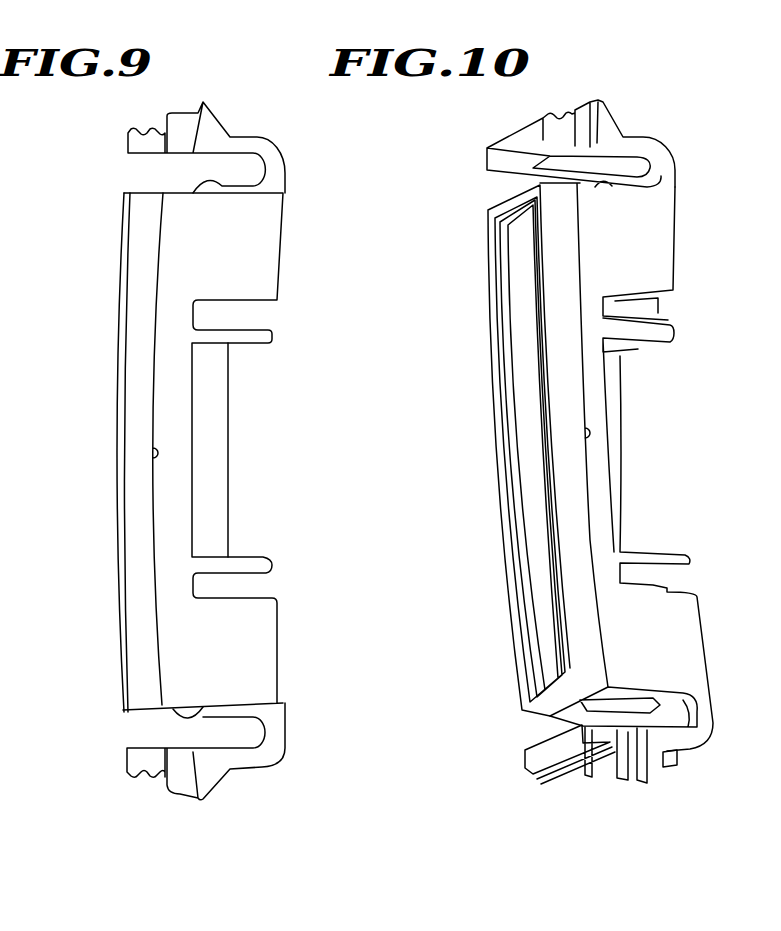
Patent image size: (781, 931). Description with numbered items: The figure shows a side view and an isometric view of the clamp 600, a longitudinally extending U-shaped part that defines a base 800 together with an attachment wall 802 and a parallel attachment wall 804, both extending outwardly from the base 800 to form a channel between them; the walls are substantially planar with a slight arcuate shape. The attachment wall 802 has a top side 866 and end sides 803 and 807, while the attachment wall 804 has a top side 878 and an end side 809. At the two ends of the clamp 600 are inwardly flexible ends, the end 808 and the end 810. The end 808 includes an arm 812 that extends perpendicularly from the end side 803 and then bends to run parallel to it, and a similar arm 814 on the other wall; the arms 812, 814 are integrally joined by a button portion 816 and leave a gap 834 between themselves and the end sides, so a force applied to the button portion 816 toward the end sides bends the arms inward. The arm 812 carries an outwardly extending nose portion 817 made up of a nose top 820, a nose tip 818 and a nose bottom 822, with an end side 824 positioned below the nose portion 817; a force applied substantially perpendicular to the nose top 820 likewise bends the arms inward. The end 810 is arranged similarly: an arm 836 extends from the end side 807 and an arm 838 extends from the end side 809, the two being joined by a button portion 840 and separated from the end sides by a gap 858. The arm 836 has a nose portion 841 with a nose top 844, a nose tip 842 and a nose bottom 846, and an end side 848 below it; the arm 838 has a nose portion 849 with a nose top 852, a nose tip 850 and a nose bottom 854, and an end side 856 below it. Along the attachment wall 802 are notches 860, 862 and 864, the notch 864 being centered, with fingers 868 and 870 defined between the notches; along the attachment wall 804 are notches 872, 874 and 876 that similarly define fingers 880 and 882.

In FIG. 9, the clamp 600 is at (45, 466).
In FIG. 10, the clamp 600 is at (420, 409).
In FIG. 9, the base 800 is at (133, 333).
In FIG. 10, the base 800 is at (513, 260).
In FIG. 9, the attachment wall 802 is at (253, 253).
In FIG. 10, the attachment wall 802 is at (658, 245).
In FIG. 9, the end side 803 is at (217, 187).
In FIG. 10, the end side 803 is at (603, 183).
In FIG. 9, the attachment wall 804 is at (218, 453).
In FIG. 10, the attachment wall 804 is at (637, 532).
In FIG. 9, the end side 807 is at (198, 712).
In FIG. 10, the end side 807 is at (667, 703).
In FIG. 9, the end 808 is at (233, 90).
In FIG. 10, the end 808 is at (625, 82).
In FIG. 10, the end side 809 is at (603, 710).
In FIG. 9, the end 810 is at (240, 824).
In FIG. 10, the end 810 is at (490, 757).
In FIG. 9, the arm 812 is at (280, 148).
In FIG. 10, the arm 812 is at (667, 145).
In FIG. 10, the arm 814 is at (650, 180).
In FIG. 9, the button portion 816 is at (152, 128).
In FIG. 10, the button portion 816 is at (497, 142).
In FIG. 9, the nose portion 817 is at (205, 124).
In FIG. 10, the nose portion 817 is at (570, 115).
In FIG. 9, the nose tip 818 is at (208, 101).
In FIG. 10, the nose tip 818 is at (610, 100).
In FIG. 9, the nose top 820 is at (218, 125).
In FIG. 10, the nose top 820 is at (620, 118).
In FIG. 9, the nose bottom 822 is at (200, 102).
In FIG. 10, the nose bottom 822 is at (593, 103).
In FIG. 9, the end side 824 is at (186, 111).
In FIG. 10, the end side 824 is at (590, 102).
In FIG. 9, the gap 834 is at (163, 175).
In FIG. 10, the gap 834 is at (507, 183).
In FIG. 9, the arm 836 is at (273, 755).
In FIG. 10, the arm 836 is at (712, 735).
In FIG. 10, the arm 838 is at (670, 722).
In FIG. 9, the button portion 840 is at (142, 780).
In FIG. 10, the button portion 840 is at (542, 778).
In FIG. 9, the nose portion 841 is at (203, 778).
In FIG. 10, the nose portion 841 is at (648, 778).
In FIG. 9, the nose tip 842 is at (202, 802).
In FIG. 10, the nose tip 842 is at (643, 783).
In FIG. 9, the nose top 844 is at (212, 787).
In FIG. 10, the nose top 844 is at (655, 773).
In FIG. 9, the nose bottom 846 is at (193, 800).
In FIG. 10, the nose bottom 846 is at (640, 790).
In FIG. 9, the end side 848 is at (180, 793).
In FIG. 10, the end side 848 is at (667, 770).
In FIG. 10, the nose portion 849 is at (620, 790).
In FIG. 10, the nose tip 850 is at (617, 790).
In FIG. 10, the nose top 852 is at (624, 786).
In FIG. 10, the nose bottom 854 is at (603, 793).
In FIG. 10, the end side 856 is at (593, 788).
In FIG. 9, the gap 858 is at (148, 737).
In FIG. 10, the gap 858 is at (530, 723).
In FIG. 9, the notch 860 is at (252, 312).
In FIG. 10, the notch 860 is at (657, 315).
In FIG. 9, the notch 862 is at (247, 583).
In FIG. 10, the notch 862 is at (673, 580).
In FIG. 9, the notch 864 is at (208, 372).
In FIG. 10, the notch 864 is at (635, 375).
In FIG. 9, the top side 866 is at (193, 397).
In FIG. 10, the top side 866 is at (652, 430).
In FIG. 9, the finger 868 is at (270, 338).
In FIG. 10, the finger 868 is at (668, 332).
In FIG. 9, the finger 870 is at (267, 565).
In FIG. 10, the finger 870 is at (687, 562).
In FIG. 9, the notch 872 is at (247, 319).
In FIG. 9, the notch 874 is at (252, 593).
In FIG. 9, the notch 876 is at (243, 515).
In FIG. 10, the notch 876 is at (635, 408).
In FIG. 9, the top side 878 is at (230, 443).
In FIG. 10, the top side 878 is at (630, 513).
In FIG. 10, the finger 880 is at (637, 350).
In FIG. 10, the finger 882 is at (640, 575).